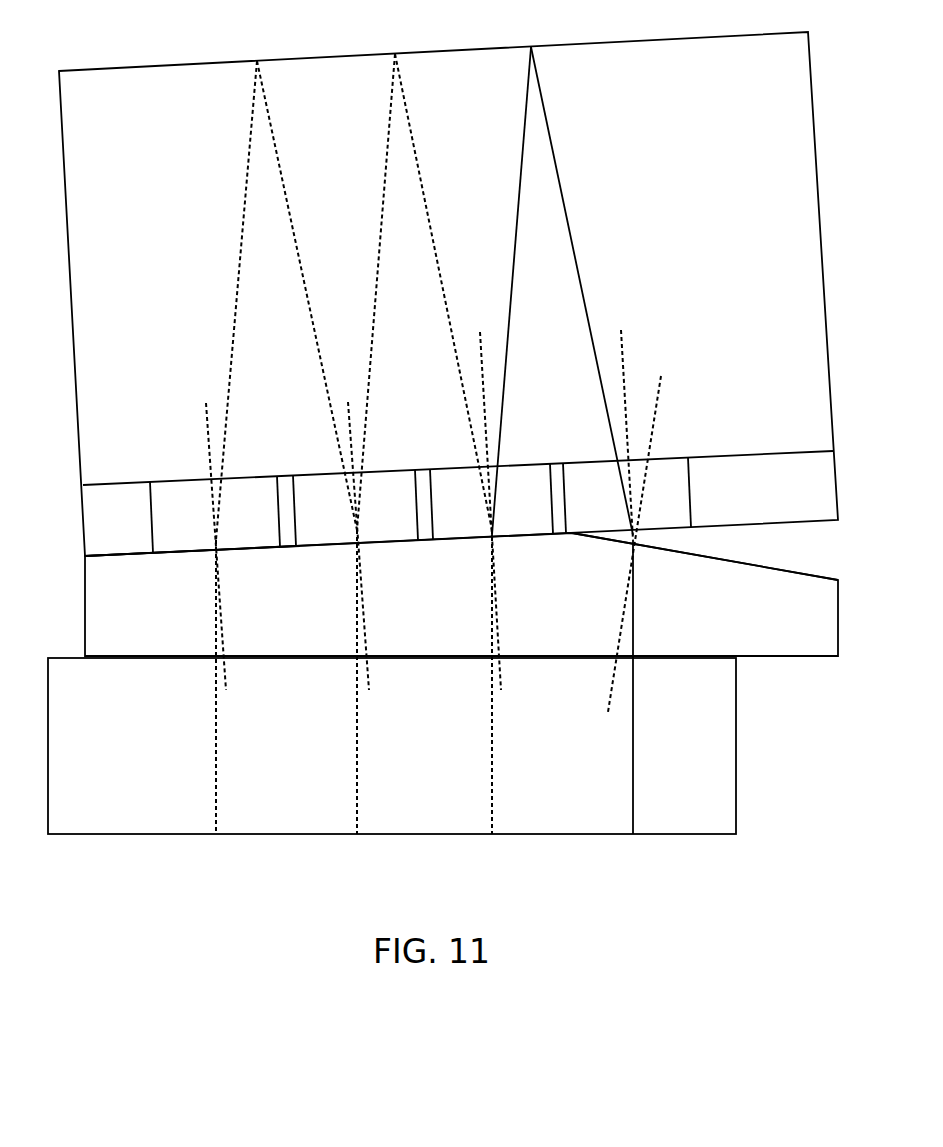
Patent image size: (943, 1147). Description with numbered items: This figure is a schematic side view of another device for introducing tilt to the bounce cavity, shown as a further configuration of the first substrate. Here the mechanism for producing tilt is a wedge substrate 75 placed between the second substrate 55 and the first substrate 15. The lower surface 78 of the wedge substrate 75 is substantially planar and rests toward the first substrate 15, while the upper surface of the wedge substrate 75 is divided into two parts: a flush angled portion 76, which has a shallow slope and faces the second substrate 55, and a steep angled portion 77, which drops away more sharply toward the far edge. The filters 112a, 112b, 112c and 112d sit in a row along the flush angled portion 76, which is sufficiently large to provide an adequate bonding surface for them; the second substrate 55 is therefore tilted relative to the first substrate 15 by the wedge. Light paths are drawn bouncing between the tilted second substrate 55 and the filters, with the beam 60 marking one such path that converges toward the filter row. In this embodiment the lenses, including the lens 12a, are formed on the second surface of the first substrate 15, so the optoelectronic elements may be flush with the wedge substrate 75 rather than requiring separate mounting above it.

The second substrate 55 is at (688, 196).
The light beam 60 is at (513, 44).
The filter 112a is at (207, 535).
The filter 112b is at (412, 527).
The filter 112c is at (482, 527).
The fourth sensor cell 112d is at (620, 518).
The wedge substrate 75 is at (428, 600).
The flush angled portion 76 is at (80, 558).
The steep angled portion 77 is at (787, 570).
The lower surface 78 is at (772, 658).
The first substrate 15 is at (430, 748).
The lens 12a is at (248, 660).